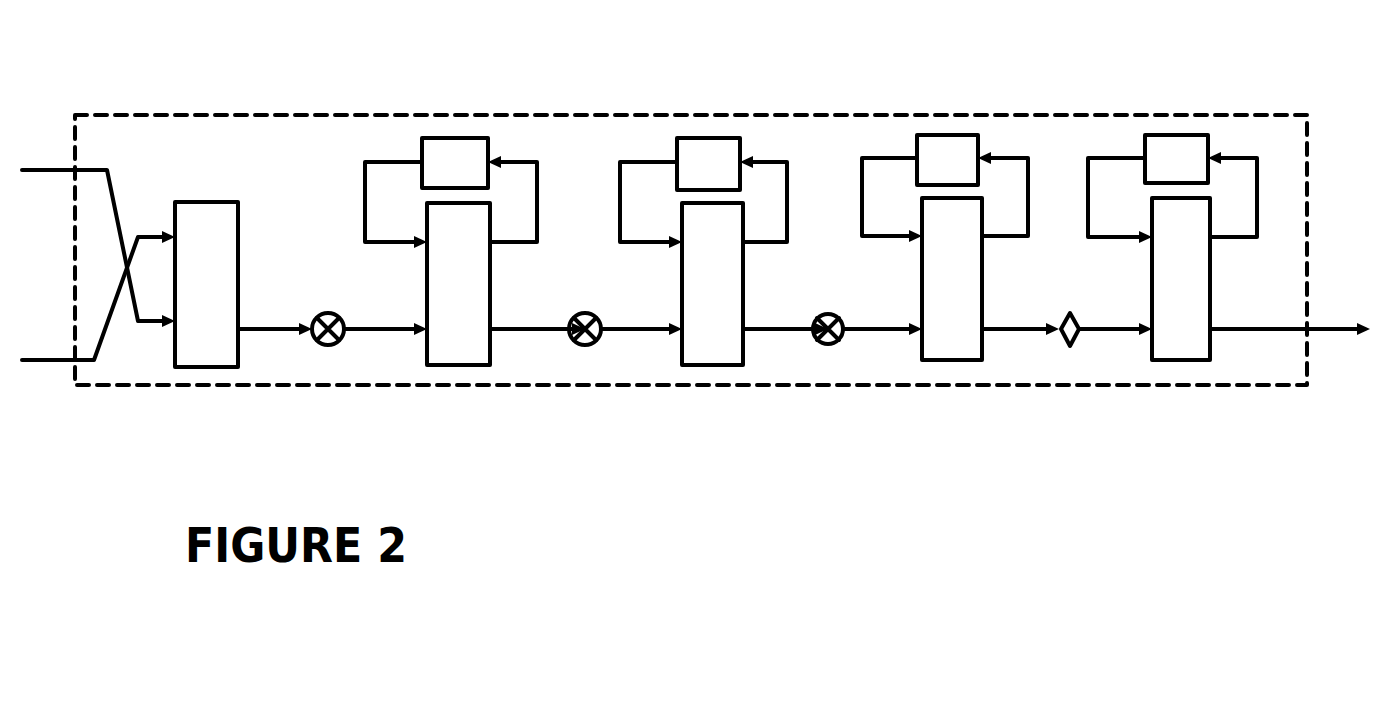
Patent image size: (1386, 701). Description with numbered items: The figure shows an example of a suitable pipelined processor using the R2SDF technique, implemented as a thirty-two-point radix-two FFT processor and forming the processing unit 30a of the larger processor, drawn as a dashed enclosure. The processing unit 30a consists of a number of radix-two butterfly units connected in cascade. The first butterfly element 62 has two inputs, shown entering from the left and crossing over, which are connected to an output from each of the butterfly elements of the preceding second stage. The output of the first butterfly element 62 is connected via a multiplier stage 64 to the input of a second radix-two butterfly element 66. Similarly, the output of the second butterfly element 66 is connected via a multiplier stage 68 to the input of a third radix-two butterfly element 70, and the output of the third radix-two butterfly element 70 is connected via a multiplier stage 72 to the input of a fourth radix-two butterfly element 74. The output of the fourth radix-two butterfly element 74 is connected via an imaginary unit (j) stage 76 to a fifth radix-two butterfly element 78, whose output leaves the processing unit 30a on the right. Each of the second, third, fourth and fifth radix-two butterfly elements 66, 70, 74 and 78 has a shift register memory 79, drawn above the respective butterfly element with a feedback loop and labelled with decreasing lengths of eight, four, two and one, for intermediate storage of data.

The processing unit 30a is at (1033, 118).
The first butterfly element 62 is at (216, 203).
The multiplier stage 64 is at (329, 345).
The second radix-2 butterfly element 66 is at (479, 366).
The multiplier stage 68 is at (585, 345).
The third radix-2 butterfly element 70 is at (715, 366).
The multiplier stage 72 is at (828, 345).
The fourth radix-2 butterfly element 74 is at (957, 361).
The imaginary unit (j) stage 76 is at (1076, 340).
The fifth radix-2 butterfly element 78 is at (1192, 361).
The shift register memory 79 is at (465, 138).